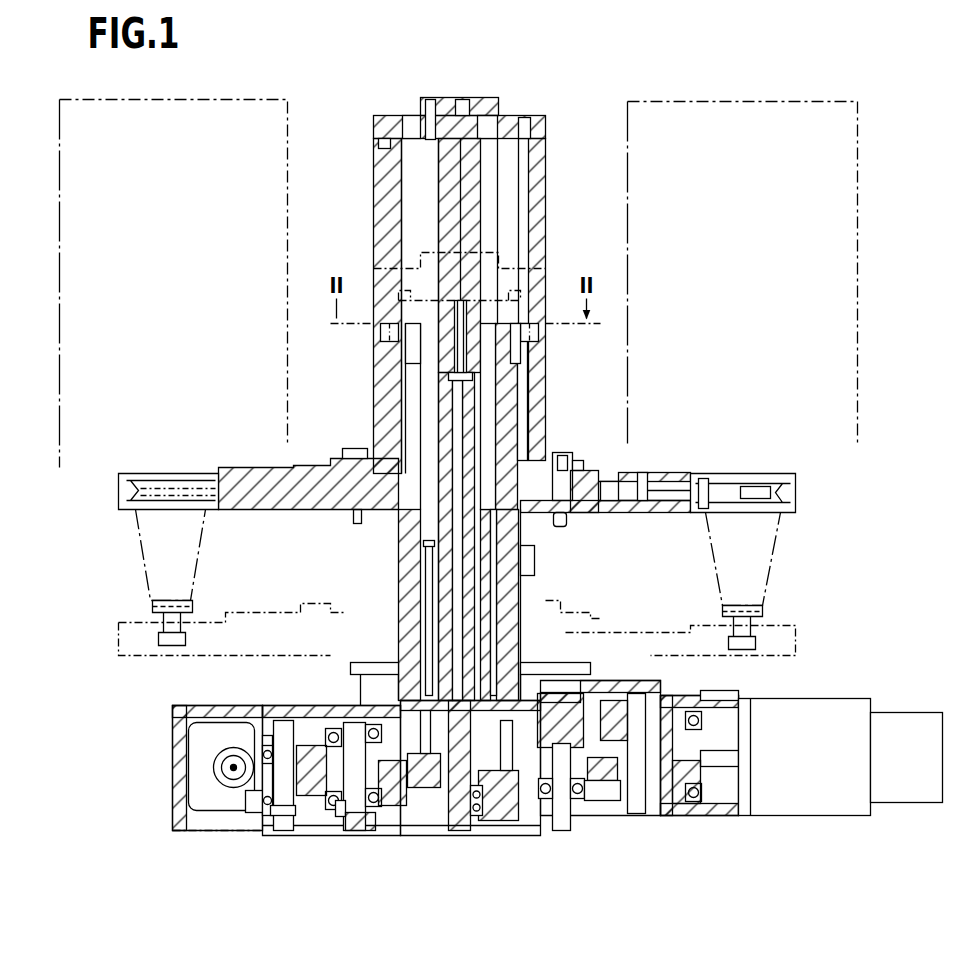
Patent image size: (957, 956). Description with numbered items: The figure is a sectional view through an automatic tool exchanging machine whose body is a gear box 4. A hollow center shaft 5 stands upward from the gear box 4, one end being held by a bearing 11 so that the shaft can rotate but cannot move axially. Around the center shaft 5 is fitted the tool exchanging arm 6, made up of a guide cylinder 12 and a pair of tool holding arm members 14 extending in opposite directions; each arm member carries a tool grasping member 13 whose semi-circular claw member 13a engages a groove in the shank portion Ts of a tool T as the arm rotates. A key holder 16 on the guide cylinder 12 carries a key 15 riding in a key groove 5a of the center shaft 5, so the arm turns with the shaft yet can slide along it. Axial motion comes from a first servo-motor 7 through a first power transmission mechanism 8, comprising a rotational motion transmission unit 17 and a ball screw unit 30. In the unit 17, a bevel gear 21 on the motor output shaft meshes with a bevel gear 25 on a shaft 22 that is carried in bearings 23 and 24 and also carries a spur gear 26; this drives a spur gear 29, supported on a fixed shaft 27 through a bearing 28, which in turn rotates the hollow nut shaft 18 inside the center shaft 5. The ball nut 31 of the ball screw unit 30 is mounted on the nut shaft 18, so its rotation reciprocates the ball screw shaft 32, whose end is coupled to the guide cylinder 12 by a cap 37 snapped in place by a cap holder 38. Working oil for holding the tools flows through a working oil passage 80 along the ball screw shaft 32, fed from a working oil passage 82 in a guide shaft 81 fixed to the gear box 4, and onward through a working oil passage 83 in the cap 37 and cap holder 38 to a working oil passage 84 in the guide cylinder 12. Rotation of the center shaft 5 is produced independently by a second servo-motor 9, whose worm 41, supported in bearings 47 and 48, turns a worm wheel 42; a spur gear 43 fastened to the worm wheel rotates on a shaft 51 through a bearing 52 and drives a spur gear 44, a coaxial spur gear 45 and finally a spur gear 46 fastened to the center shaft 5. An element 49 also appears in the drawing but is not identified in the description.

The gear box 4 is at (702, 830).
The center shaft 5 is at (522, 582).
The key groove 5a is at (400, 407).
The tool exchanging arm 6 is at (560, 127).
The first servo-motor 7 is at (810, 816).
The first power transmission mechanism 8 is at (600, 680).
The second servo-motor 9 is at (173, 795).
The bearing 11 is at (375, 668).
The guide cylinder 12 is at (546, 236).
The tool grasping members 13 is at (205, 473).
The semi-circular claw member 13a is at (772, 488).
The tool holding arm members 14 is at (258, 472).
The key 15 is at (385, 322).
The key holder 16 is at (367, 340).
The rotational motion transmission unit 17 is at (705, 690).
The nut shaft 18 is at (545, 590).
The bevel gear 21 is at (679, 818).
The shaft 22 is at (637, 795).
The bearing 23 is at (690, 712).
The bearing 24 is at (607, 790).
The bevel gear 25 is at (630, 693).
The spur gear 26 is at (590, 790).
The fixed shaft 27 is at (560, 808).
The bearing 28 is at (592, 695).
The spur gear 29 is at (523, 772).
The ball screw unit 30 is at (483, 782).
The ball nut 31 is at (492, 432).
The ball screw shaft 32 is at (478, 200).
The cap 37 is at (528, 118).
The cap holder 38 is at (447, 99).
The worm 41 is at (203, 778).
The worm wheel 42 is at (230, 748).
The spur gear 43 is at (250, 808).
The spur gear 44 is at (317, 800).
The spur gear 45 is at (315, 735).
The spur gear 46 is at (393, 802).
The bearing 47 is at (266, 748).
The bearing 48 is at (255, 805).
The nut 49 is at (280, 808).
The shaft 51 is at (350, 812).
The bearing 52 is at (373, 830).
The working oil passage 80 is at (473, 346).
The guide shaft 81 is at (425, 590).
The working oil passage 82 is at (442, 830).
The working oil passage 83 is at (542, 113).
The working oil passage 84 is at (515, 268).
The tool T is at (287, 130).
The shank portion Ts is at (206, 540).